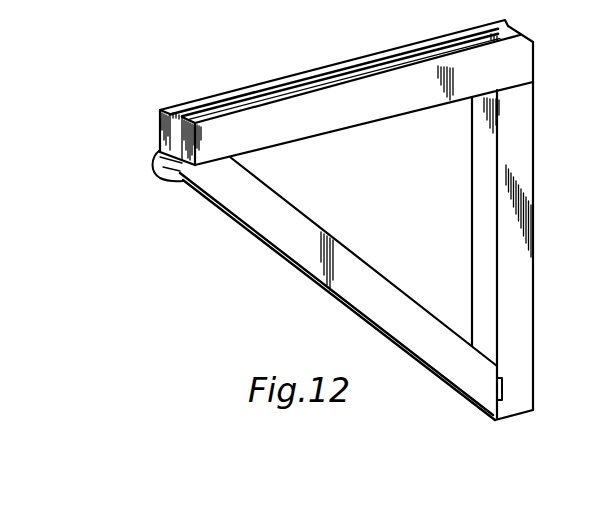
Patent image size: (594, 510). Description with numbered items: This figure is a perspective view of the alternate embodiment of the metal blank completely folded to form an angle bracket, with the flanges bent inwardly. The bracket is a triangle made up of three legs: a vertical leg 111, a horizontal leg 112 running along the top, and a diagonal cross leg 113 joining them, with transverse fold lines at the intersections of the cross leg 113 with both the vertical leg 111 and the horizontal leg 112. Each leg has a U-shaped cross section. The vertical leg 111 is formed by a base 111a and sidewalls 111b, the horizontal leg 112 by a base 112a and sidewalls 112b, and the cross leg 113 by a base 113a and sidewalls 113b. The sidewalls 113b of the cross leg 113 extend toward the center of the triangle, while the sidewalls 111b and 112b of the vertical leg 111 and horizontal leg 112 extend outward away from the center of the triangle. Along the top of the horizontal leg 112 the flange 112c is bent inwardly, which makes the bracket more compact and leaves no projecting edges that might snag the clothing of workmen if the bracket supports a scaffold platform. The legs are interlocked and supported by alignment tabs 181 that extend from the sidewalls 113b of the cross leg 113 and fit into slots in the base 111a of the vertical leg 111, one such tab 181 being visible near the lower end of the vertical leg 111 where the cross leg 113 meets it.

The vertical leg 111 is at (540, 280).
The base of the vertical leg 111a is at (478, 163).
The sidewalls of the vertical leg 111b is at (522, 158).
The horizontal leg 112 is at (362, 56).
The base of the horizontal leg 112a is at (176, 150).
The sidewalls of the horizontal leg 112b is at (338, 108).
The flange of the horizontal leg 112c is at (268, 98).
The cross leg 113 is at (359, 332).
The base of the cross leg 113a is at (288, 263).
The sidewalls of the cross leg 113b is at (347, 292).
The alignment tabs 181 is at (502, 389).